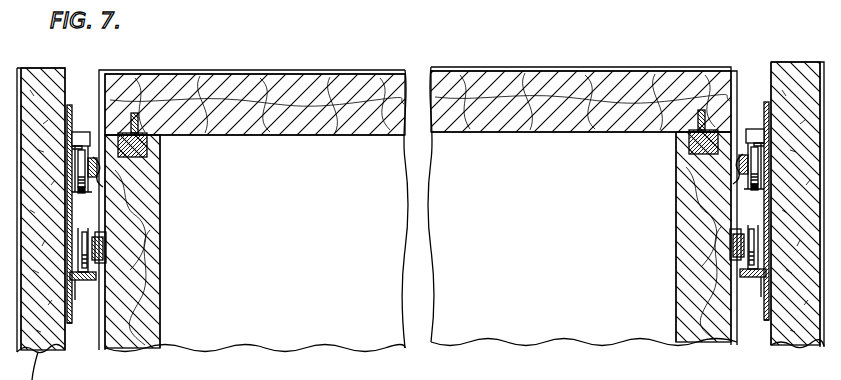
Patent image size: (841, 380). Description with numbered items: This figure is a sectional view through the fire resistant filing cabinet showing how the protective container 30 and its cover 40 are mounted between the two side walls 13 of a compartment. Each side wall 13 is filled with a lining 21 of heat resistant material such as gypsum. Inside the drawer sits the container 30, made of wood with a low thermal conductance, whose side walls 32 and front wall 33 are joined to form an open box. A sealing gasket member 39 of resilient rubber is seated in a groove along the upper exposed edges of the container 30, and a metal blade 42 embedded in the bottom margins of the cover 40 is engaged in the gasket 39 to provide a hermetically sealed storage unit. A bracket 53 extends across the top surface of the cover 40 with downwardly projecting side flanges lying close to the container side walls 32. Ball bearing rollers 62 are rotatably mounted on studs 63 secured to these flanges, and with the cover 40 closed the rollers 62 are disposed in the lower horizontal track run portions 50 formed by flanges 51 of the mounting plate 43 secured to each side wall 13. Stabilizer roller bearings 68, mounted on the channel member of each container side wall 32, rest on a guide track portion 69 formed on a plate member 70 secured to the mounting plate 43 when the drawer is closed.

The side wall 13 is at (38, 70).
The lining 21 is at (812, 345).
The container 30 is at (342, 241).
The side wall 32 is at (155, 280).
The front wall 33 is at (544, 297).
The sealing gasket member 39 is at (147, 147).
The cover 40 is at (380, 89).
The metal blade 42 is at (134, 112).
The mounting plate 43 is at (74, 350).
The lower horizontal track run portion 50 is at (68, 204).
The flange 51 is at (79, 132).
The bracket 53 is at (308, 72).
The ball bearing roller 62 is at (97, 165).
The stud 63 is at (73, 200).
The stabilizer roller bearing 68 is at (90, 238).
The guide track portion 69 is at (88, 283).
The plate member 70 is at (75, 291).